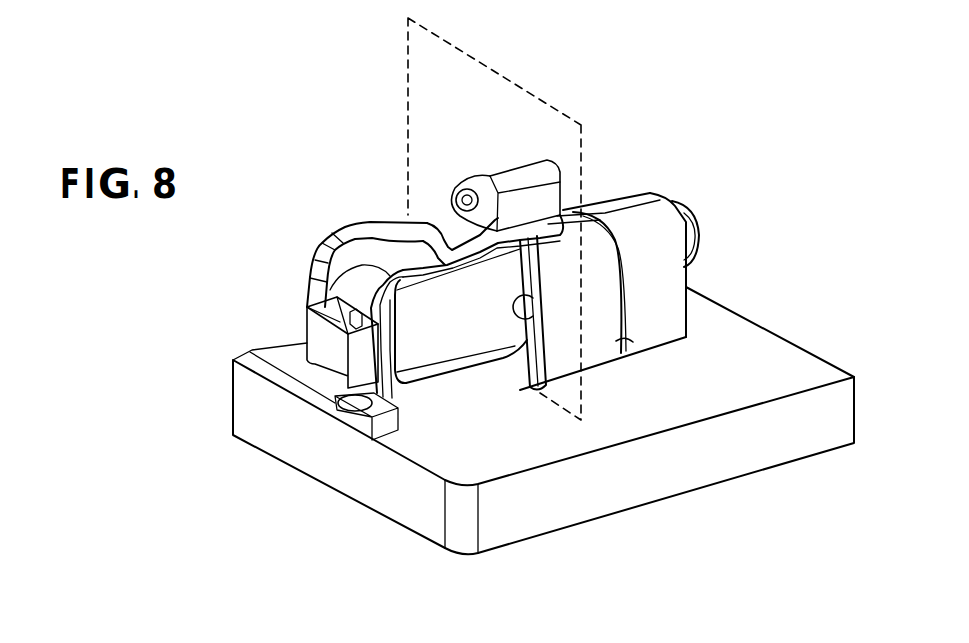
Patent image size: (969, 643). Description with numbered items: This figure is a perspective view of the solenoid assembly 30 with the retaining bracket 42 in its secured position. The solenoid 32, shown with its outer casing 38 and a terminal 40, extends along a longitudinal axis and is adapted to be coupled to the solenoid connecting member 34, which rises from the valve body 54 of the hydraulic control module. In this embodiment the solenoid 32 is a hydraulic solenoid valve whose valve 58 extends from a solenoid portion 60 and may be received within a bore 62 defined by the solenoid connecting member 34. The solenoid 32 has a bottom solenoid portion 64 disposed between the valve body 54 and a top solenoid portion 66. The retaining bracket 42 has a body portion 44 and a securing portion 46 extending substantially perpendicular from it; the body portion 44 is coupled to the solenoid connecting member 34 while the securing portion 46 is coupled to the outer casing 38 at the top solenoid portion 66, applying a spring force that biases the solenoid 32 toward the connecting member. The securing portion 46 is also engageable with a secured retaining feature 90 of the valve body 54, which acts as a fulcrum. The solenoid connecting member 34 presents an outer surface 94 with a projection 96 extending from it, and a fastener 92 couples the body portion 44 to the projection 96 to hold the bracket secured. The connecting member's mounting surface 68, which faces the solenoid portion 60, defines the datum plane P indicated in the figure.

The solenoid assembly 30 is at (300, 147).
The solenoid 32 is at (463, 343).
The solenoid connecting member 34 is at (545, 350).
The outer casing 38 is at (435, 343).
The terminal 40 is at (347, 325).
The retaining bracket 42 is at (347, 221).
The body portion 44 is at (396, 198).
The securing portion 46 is at (303, 291).
The valve body 54 is at (824, 377).
The valve 58 is at (707, 231).
The solenoid portion 60 is at (489, 396).
The bore 62 is at (536, 300).
The bottom solenoid portion 64 is at (408, 400).
The top solenoid portion 66 is at (485, 270).
The mounting surface 68 is at (543, 366).
The secured retaining feature 90 is at (348, 398).
The fastener 92 is at (456, 191).
The outer surface 94 is at (620, 341).
The projection 96 is at (525, 177).
The datum plane P is at (425, 78).